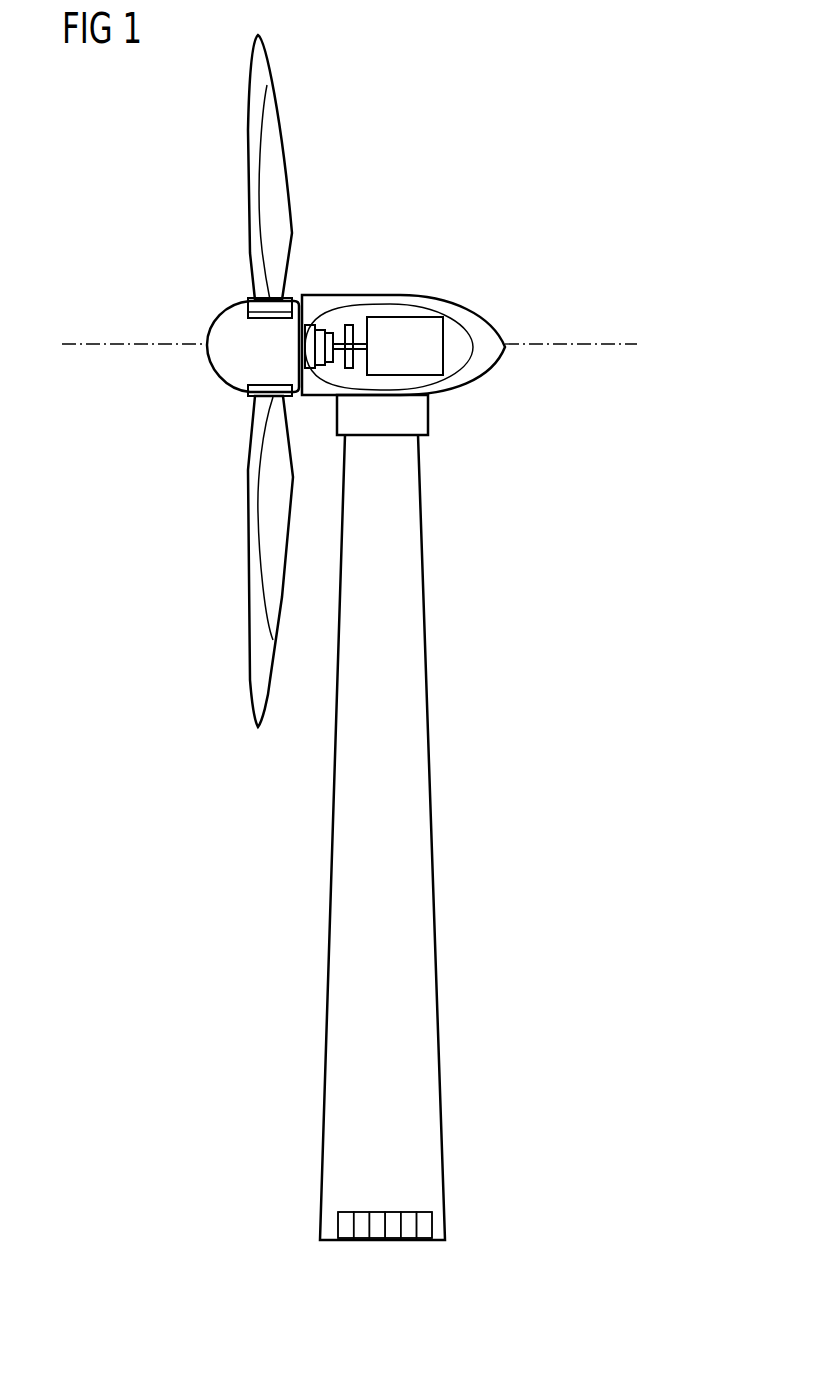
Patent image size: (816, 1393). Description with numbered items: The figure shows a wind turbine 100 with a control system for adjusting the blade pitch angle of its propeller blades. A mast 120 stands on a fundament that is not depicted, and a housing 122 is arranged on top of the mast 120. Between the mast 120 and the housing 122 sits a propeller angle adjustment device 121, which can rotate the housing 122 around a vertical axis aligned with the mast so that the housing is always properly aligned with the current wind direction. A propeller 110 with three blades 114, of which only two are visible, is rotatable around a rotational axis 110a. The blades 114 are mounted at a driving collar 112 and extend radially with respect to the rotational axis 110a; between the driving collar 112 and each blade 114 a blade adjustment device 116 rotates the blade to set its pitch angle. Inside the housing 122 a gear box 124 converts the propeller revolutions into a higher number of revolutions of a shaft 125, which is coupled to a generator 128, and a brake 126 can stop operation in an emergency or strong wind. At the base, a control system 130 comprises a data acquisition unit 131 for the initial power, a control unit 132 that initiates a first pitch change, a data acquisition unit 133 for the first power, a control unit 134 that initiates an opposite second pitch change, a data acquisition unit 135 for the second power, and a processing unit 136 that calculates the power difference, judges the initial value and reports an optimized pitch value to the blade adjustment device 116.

The wind turbine 100 is at (562, 107).
The propeller 110 is at (185, 258).
The rotational axis 110a is at (100, 343).
The driving collar 112 is at (213, 362).
The blades 114 is at (250, 93).
The blade adjustment device 116 is at (250, 302).
The mast 120 is at (428, 728).
The propeller angle adjustment device 121 is at (430, 415).
The housing 122 is at (473, 315).
The gearbox 124 is at (318, 333).
The shaft 125 is at (342, 350).
The brake 126 is at (350, 327).
The generator 128 is at (413, 327).
The control system 130 is at (417, 1274).
The data acquisition unit 131 is at (343, 1241).
The control unit 132 is at (360, 1241).
The data acquisition unit 133 is at (375, 1241).
The control unit 134 is at (390, 1241).
The data acquisition unit 135 is at (405, 1241).
The processing unit 136 is at (422, 1241).